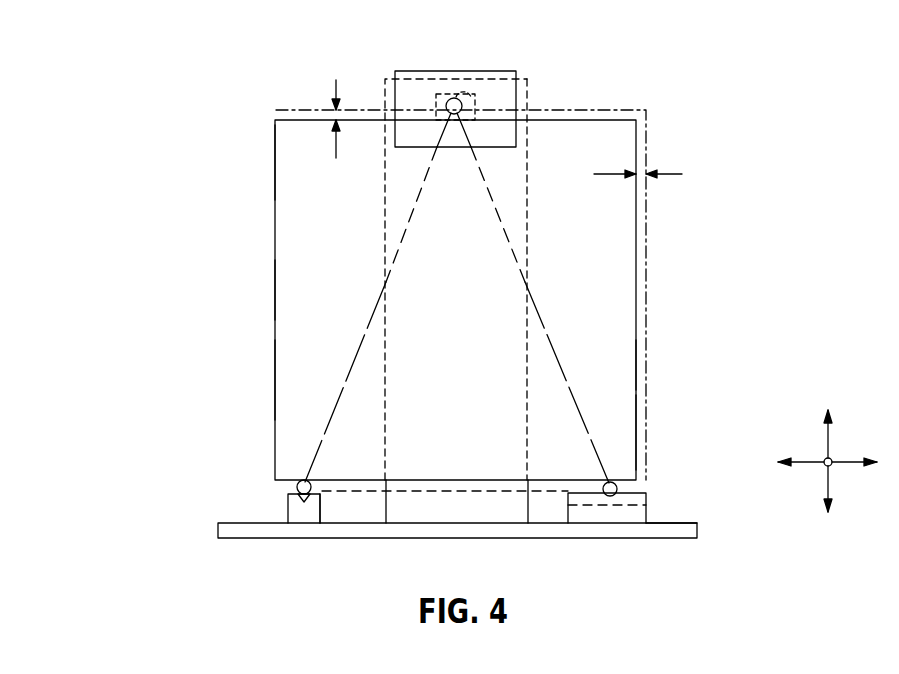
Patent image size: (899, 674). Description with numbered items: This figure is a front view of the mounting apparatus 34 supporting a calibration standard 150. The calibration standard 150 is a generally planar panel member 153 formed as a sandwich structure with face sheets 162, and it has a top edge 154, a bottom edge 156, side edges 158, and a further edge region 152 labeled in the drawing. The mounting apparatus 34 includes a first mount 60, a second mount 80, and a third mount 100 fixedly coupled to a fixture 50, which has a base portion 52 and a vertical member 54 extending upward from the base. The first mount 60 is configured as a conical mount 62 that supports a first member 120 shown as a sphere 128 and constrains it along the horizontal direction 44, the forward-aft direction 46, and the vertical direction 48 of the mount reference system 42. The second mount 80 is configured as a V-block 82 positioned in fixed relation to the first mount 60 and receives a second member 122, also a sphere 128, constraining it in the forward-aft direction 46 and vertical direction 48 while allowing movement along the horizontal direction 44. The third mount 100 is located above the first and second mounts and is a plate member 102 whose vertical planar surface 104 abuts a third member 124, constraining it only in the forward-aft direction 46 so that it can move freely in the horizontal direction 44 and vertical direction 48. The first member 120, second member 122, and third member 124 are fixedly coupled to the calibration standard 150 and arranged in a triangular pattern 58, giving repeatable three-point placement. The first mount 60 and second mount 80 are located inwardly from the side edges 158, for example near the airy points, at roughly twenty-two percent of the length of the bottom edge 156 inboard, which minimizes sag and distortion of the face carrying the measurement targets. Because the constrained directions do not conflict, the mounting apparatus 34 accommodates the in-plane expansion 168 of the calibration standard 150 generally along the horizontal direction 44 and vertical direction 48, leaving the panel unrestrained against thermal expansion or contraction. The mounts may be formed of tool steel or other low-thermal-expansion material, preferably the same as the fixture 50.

The mounting apparatus 34 is at (527, 78).
The mount reference system 42 is at (826, 458).
The horizontal direction 44 is at (822, 462).
The forward-aft direction 46 is at (832, 466).
The vertical direction 48 is at (826, 465).
The fixture 50 is at (697, 538).
The base portion 52 is at (683, 523).
The vertical member 54 is at (385, 79).
The triangular pattern 58 is at (555, 347).
The first mount 60 is at (302, 510).
The conical mount 62 is at (320, 511).
The second mount 80 is at (613, 539).
The V-block 82 is at (608, 515).
The third mount 100 is at (500, 86).
The plate member 102 is at (488, 71).
The planar surface 104 is at (505, 99).
The first member 120 is at (297, 484).
The second member 122 is at (616, 484).
The third member 124 is at (451, 99).
The sphere 128 is at (447, 265).
The calibration standard 150 is at (636, 243).
The panel first side 152 is at (275, 165).
The panel member 153 is at (275, 378).
The top edge 154 is at (617, 120).
The bottom edge 156 is at (433, 480).
The side edges 158 is at (275, 285).
The face sheets 162 is at (636, 414).
The in-plane expansion 168 is at (336, 80).